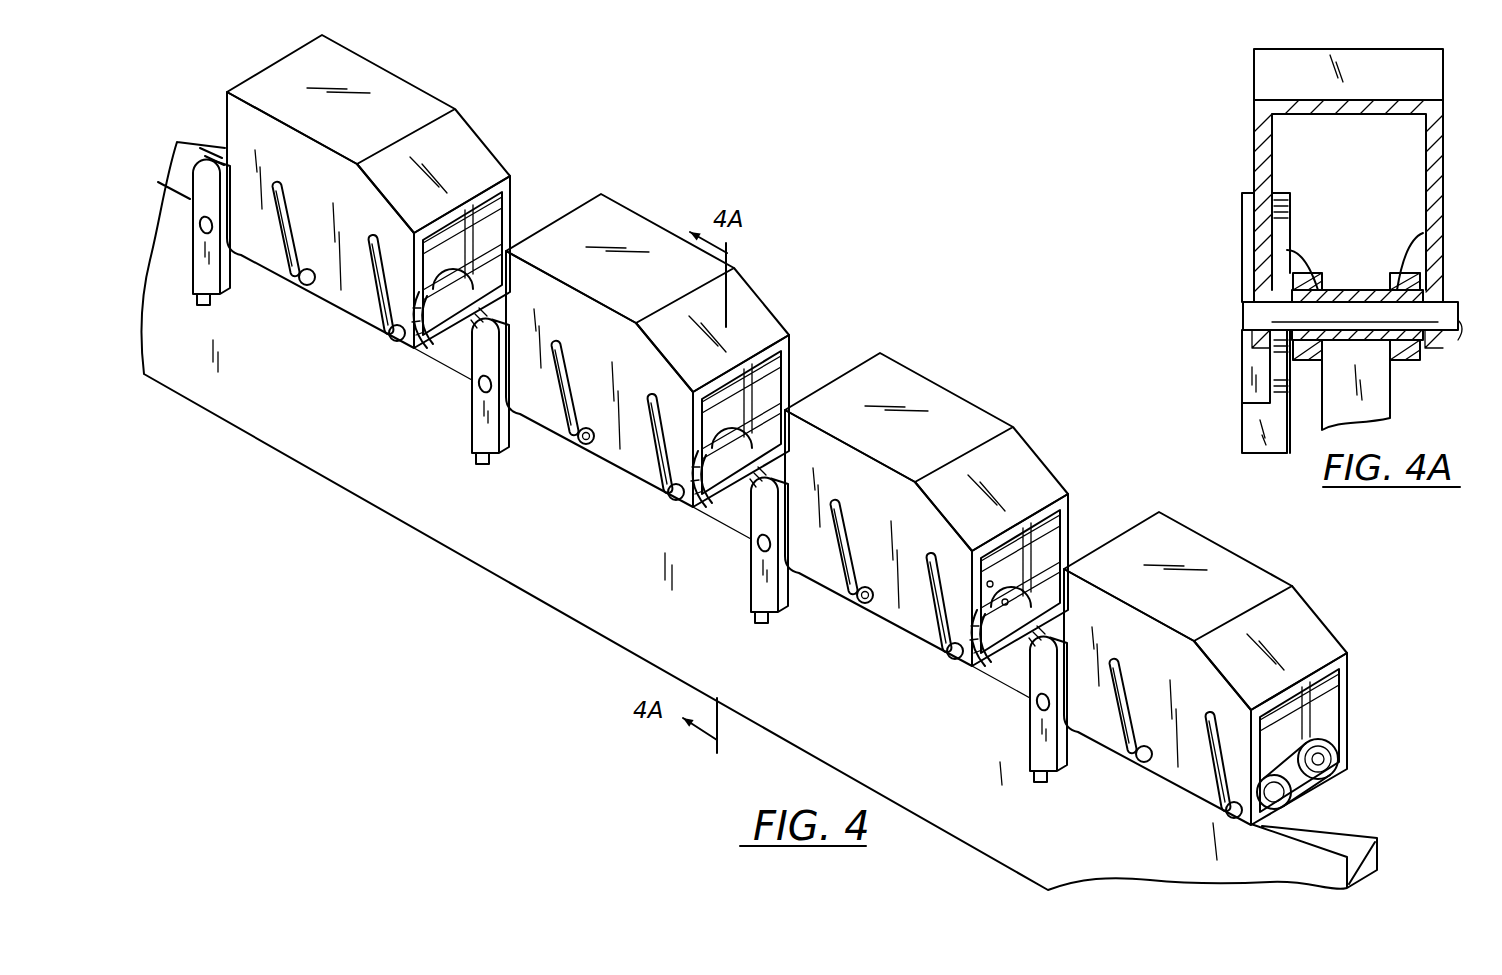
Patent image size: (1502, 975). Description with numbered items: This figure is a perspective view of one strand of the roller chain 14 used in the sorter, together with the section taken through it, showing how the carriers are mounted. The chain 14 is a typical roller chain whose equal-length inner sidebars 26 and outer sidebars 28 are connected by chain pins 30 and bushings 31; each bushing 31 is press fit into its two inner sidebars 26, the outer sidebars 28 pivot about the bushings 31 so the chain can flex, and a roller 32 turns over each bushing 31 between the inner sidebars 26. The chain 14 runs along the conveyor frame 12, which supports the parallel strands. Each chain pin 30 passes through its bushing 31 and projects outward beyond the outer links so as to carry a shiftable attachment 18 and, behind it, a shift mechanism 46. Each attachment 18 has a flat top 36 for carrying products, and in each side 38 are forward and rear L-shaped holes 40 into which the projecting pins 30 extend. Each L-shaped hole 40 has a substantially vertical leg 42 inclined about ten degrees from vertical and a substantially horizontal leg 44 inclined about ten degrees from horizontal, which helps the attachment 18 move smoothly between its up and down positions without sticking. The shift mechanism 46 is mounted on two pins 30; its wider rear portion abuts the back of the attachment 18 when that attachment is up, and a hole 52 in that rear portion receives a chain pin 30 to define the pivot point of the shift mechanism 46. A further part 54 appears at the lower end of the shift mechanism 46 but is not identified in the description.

In FIG. 4, the conveyor frame 12 is at (665, 600).
In FIG. 4A, the conveyor frame 12 is at (1367, 402).
In FIG. 4, the roller chain 14 is at (1365, 729).
In FIG. 4, the shiftable attachment 18 is at (789, 455).
In FIG. 4A, the shiftable attachment 18 is at (1332, 185).
In FIG. 4, the inner sidebar 26 is at (1035, 508).
In FIG. 4A, the inner sidebar 26 is at (1423, 240).
In FIG. 4, the outer sidebar 28 is at (1014, 582).
In FIG. 4A, the outer sidebar 28 is at (1420, 272).
In FIG. 4, the chain pin 30 is at (168, 242).
In FIG. 4A, the chain pin 30 is at (1474, 340).
In FIG. 4A, the bushing 31 is at (1365, 268).
In FIG. 4, the roller 32 is at (918, 492).
In FIG. 4A, the roller 32 is at (1333, 268).
In FIG. 4, the flat top 36 is at (1206, 576).
In FIG. 4A, the flat top 36 is at (1333, 49).
In FIG. 4, the side 38 is at (789, 483).
In FIG. 4A, the side 38 is at (1252, 115).
In FIG. 4, the L-shaped hole 40 is at (752, 489).
In FIG. 4A, the L-shaped hole 40 is at (1258, 153).
In FIG. 4, the substantially vertical leg 42 is at (546, 455).
In FIG. 4, the substantially horizontal leg 44 is at (849, 628).
In FIG. 4, the shift mechanism 46 is at (616, 468).
In FIG. 4A, the shift mechanism 46 is at (1248, 194).
In FIG. 4, the hole 52 is at (724, 548).
In FIG. 4, the foot bracket 54 is at (622, 553).
In FIG. 4A, the foot bracket 54 is at (1267, 455).